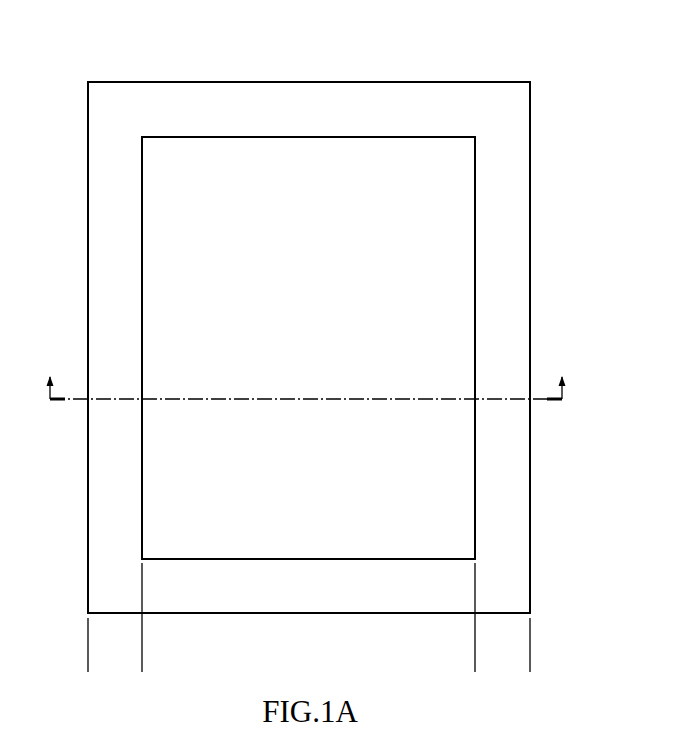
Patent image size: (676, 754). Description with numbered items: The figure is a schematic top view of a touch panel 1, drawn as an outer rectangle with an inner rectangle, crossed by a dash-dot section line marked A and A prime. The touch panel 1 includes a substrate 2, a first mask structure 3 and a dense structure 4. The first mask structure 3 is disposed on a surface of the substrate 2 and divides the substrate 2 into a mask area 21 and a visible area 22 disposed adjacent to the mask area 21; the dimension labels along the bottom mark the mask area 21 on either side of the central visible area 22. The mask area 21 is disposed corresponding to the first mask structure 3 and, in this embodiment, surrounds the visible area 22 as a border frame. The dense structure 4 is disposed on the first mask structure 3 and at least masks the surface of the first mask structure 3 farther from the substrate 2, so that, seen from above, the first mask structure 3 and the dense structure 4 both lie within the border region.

The touch panel 1 is at (103, 43).
The substrate 2 is at (292, 82).
The first mask structure 3 is at (522, 210).
The dense structure 4 is at (520, 287).
The mask area 21 is at (141, 663).
The visible area 22 is at (474, 663).